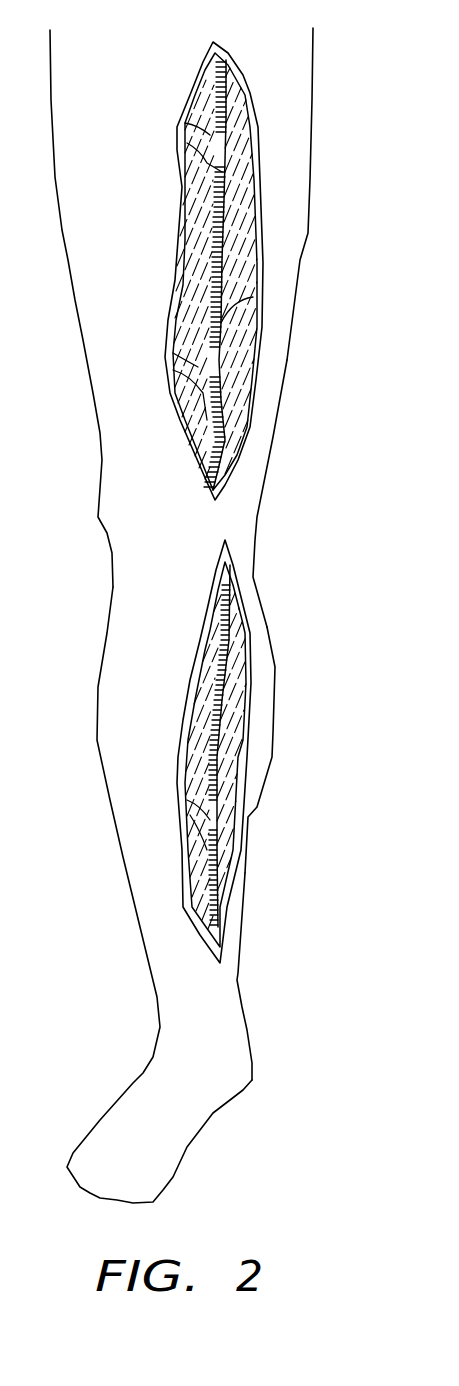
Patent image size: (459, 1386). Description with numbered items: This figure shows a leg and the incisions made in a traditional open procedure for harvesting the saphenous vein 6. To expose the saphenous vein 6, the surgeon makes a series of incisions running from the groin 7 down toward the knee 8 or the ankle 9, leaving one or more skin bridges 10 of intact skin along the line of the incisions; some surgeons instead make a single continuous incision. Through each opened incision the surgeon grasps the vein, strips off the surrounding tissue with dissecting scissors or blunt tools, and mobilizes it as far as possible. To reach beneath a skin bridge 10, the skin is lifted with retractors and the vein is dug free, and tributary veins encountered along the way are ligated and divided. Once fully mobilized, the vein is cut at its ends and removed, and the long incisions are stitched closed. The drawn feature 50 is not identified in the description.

The saphenous vein 6 is at (207, 163).
The groin 7 is at (293, 20).
The knee 8 is at (107, 513).
The ankle 9 is at (222, 1005).
The skin bridge 10 is at (213, 520).
The branch channel 50 is at (240, 320).